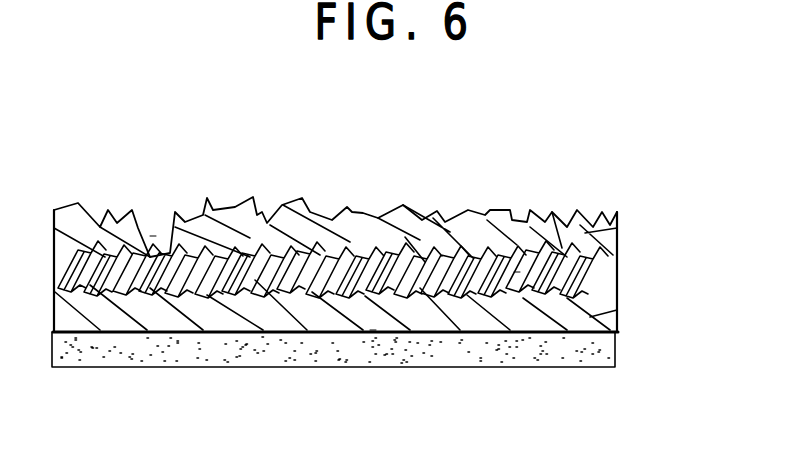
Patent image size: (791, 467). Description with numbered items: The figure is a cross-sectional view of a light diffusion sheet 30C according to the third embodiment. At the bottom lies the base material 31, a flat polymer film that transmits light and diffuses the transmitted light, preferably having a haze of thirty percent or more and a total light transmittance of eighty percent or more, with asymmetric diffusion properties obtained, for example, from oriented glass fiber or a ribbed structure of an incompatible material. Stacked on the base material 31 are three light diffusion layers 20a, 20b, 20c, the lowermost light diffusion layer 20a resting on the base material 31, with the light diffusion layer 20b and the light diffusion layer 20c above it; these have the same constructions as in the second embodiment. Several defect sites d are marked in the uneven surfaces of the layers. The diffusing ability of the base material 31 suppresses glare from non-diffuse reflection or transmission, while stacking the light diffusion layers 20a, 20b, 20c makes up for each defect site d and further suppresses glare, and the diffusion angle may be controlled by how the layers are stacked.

The light diffusion sheet 30C is at (583, 148).
The light diffusion layer 20c is at (587, 240).
The light diffusion layer 20b is at (610, 268).
The light diffusion layer 20a is at (585, 318).
The base material 31 is at (573, 352).
The defect site d is at (153, 236).